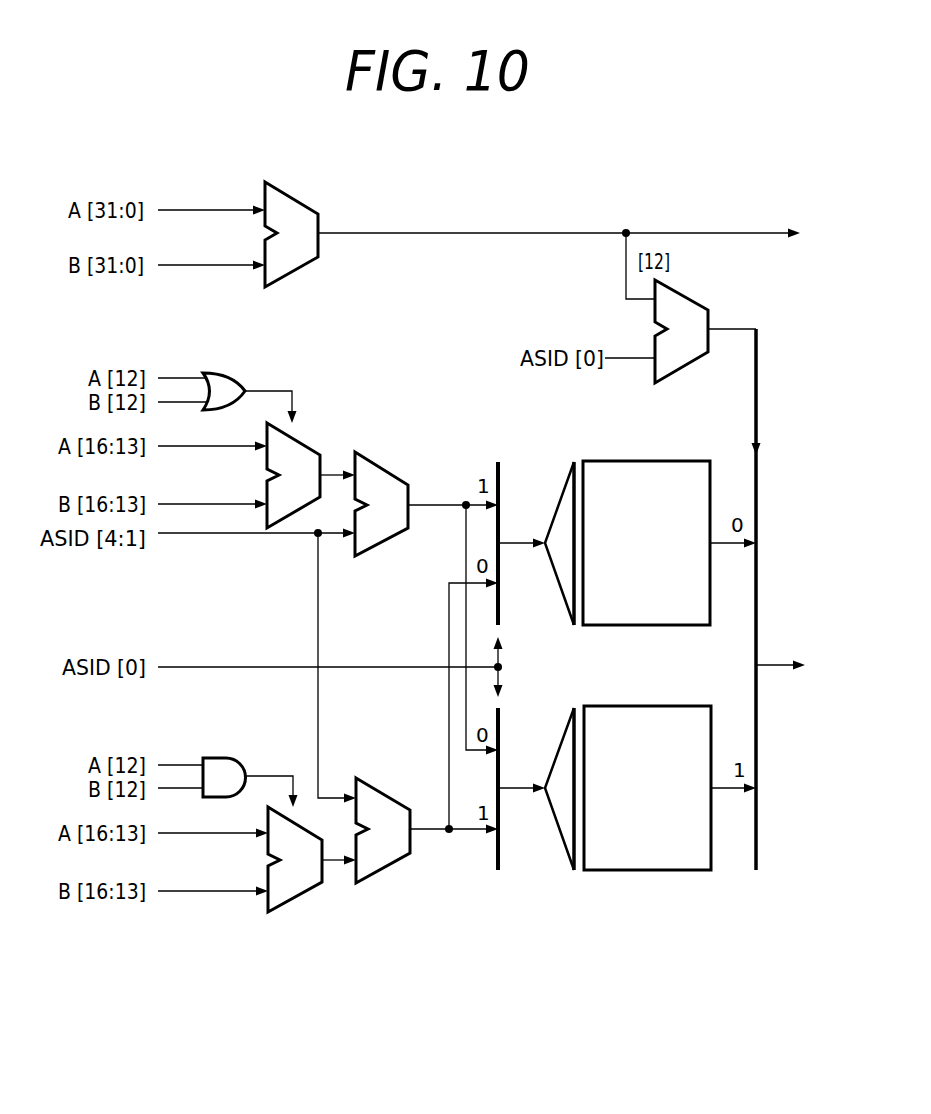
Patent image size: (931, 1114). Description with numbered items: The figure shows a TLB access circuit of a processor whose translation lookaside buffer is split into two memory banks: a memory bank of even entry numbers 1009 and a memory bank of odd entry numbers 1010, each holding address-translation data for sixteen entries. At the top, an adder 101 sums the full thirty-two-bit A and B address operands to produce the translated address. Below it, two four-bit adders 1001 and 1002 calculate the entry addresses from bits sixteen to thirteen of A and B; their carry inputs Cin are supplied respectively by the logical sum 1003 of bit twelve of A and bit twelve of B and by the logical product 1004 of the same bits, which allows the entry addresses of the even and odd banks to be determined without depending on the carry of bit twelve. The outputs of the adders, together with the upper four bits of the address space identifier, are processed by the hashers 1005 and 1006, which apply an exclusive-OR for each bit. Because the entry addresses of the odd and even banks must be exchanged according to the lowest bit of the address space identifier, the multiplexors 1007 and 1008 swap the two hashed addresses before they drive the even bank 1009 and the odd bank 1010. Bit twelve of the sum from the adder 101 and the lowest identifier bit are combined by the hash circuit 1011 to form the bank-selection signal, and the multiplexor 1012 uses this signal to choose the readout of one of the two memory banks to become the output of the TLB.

The adder 101 is at (298, 200).
The four-bit adder 1001 is at (292, 440).
The four-bit adder 1002 is at (298, 898).
The logical sum 1003 is at (214, 375).
The logical product 1004 is at (216, 758).
The hasher 1005 is at (380, 458).
The hasher 1006 is at (380, 784).
The multiplexor 1007 is at (500, 478).
The multiplexor 1008 is at (500, 722).
The memory bank of even entry numbers 1009 is at (650, 461).
The memory bank of odd entry numbers 1010 is at (652, 706).
The hash circuit 1011 is at (690, 293).
The multiplexor 1012 is at (758, 505).